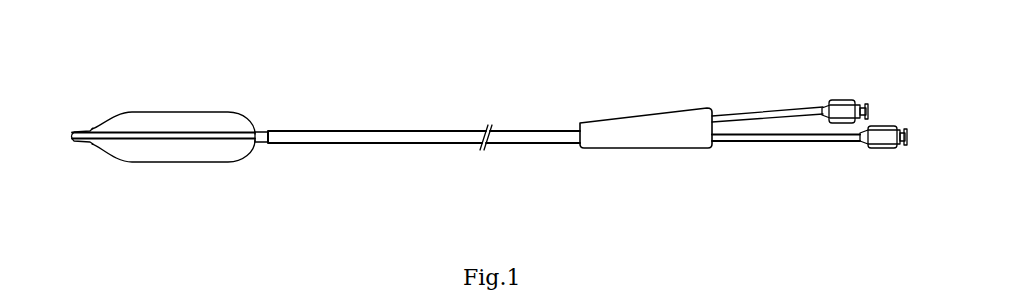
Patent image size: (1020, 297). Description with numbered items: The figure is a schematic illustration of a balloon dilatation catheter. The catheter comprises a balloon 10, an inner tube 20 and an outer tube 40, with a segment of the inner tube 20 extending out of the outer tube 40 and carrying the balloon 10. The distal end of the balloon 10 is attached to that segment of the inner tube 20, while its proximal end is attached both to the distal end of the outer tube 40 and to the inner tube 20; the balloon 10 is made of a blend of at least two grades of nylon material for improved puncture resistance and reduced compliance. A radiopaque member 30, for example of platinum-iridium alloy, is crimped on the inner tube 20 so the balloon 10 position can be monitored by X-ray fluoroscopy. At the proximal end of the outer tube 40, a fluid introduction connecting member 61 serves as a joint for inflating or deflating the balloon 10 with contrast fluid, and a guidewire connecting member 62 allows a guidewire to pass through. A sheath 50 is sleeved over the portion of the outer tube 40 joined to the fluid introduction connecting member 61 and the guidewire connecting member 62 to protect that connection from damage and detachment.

The balloon 10 is at (132, 111).
The inner tube 20 is at (163, 140).
The radiopaque member 30 is at (217, 133).
The outer tube 40 is at (378, 130).
The sheath 50 is at (636, 133).
The fluid introduction connecting member 61 is at (840, 99).
The guidewire connecting member 62 is at (873, 146).